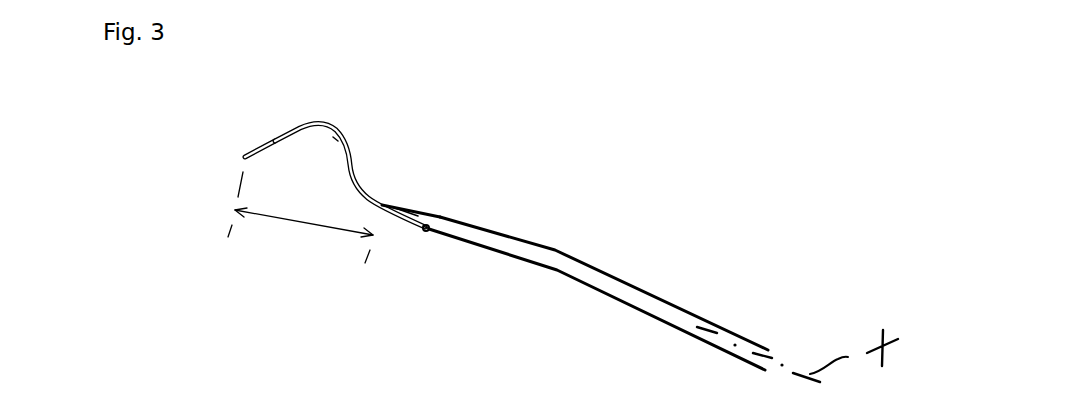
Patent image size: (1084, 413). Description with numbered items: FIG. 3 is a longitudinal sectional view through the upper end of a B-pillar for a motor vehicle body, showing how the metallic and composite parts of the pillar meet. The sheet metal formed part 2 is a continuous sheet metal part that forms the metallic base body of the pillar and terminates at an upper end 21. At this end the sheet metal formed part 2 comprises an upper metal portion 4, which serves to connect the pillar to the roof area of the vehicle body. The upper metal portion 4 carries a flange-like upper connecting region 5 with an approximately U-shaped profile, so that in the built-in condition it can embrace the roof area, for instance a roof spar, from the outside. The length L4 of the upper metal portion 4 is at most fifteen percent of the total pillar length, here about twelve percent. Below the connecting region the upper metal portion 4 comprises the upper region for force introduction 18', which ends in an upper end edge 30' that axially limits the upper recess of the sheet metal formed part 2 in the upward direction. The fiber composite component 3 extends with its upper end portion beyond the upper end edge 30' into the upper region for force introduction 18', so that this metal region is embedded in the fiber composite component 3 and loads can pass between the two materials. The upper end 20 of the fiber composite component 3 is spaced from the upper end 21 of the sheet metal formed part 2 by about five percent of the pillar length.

The sheet metal formed part 2 is at (316, 116).
The upper end 21 is at (245, 157).
The upper metal portion 4 is at (347, 123).
The upper connecting region 5 is at (338, 141).
The length of the upper metal portion L4 is at (325, 228).
The upper end of the fiber composite component 20 is at (382, 204).
The upper region for force introduction 18' is at (472, 190).
The upper end edge 30' is at (386, 277).
The fiber composite component 3 is at (680, 318).